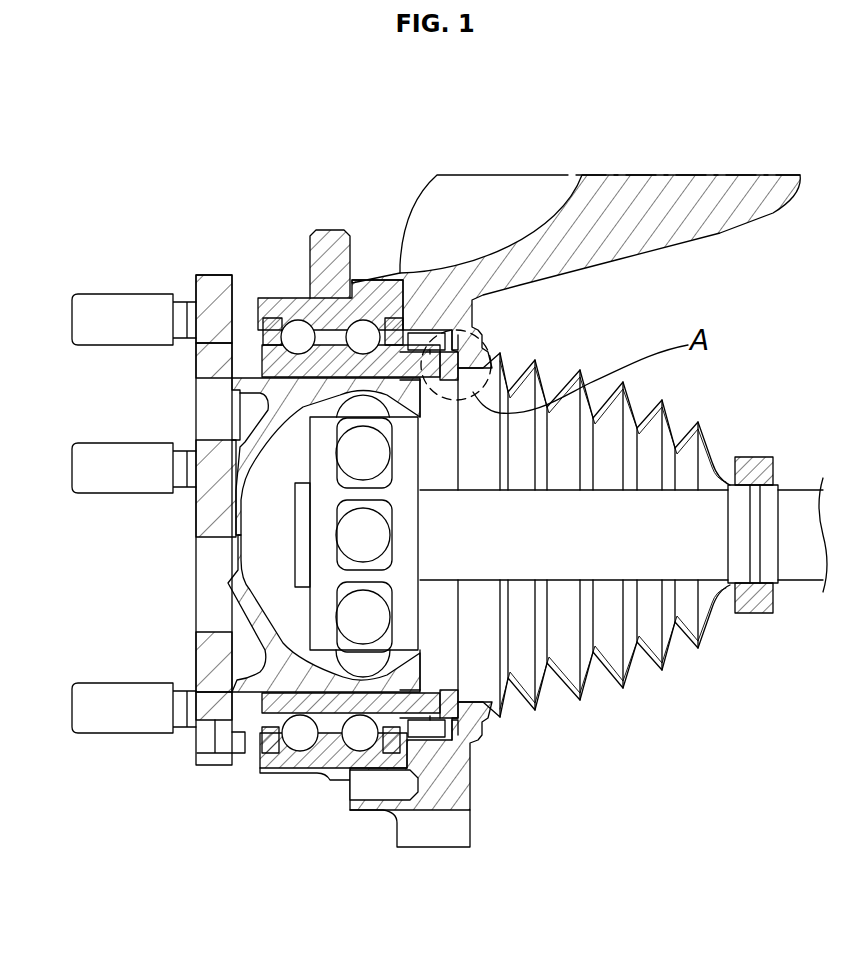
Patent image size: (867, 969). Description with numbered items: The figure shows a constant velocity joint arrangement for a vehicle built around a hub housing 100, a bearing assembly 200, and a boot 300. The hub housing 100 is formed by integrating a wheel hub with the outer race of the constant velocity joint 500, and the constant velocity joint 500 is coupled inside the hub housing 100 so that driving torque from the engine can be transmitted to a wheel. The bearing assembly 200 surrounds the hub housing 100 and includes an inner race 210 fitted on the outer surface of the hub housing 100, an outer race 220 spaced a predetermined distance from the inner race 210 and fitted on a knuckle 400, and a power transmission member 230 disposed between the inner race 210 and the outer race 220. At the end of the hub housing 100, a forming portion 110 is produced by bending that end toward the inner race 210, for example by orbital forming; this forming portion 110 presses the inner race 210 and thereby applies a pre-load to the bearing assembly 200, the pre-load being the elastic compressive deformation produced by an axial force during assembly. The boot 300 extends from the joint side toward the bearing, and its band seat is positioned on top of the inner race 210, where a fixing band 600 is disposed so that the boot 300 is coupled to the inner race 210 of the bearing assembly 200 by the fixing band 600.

The hub housing 100 is at (210, 588).
The forming portion 110 is at (480, 340).
The bearing assembly 200 is at (112, 228).
The inner race 210 is at (267, 340).
The outer race 220 is at (327, 230).
The power transmission member 230 is at (297, 337).
The boot 300 is at (668, 412).
The knuckle 400 is at (473, 200).
The constant velocity joint 500 is at (330, 592).
The fixing band 600 is at (425, 337).